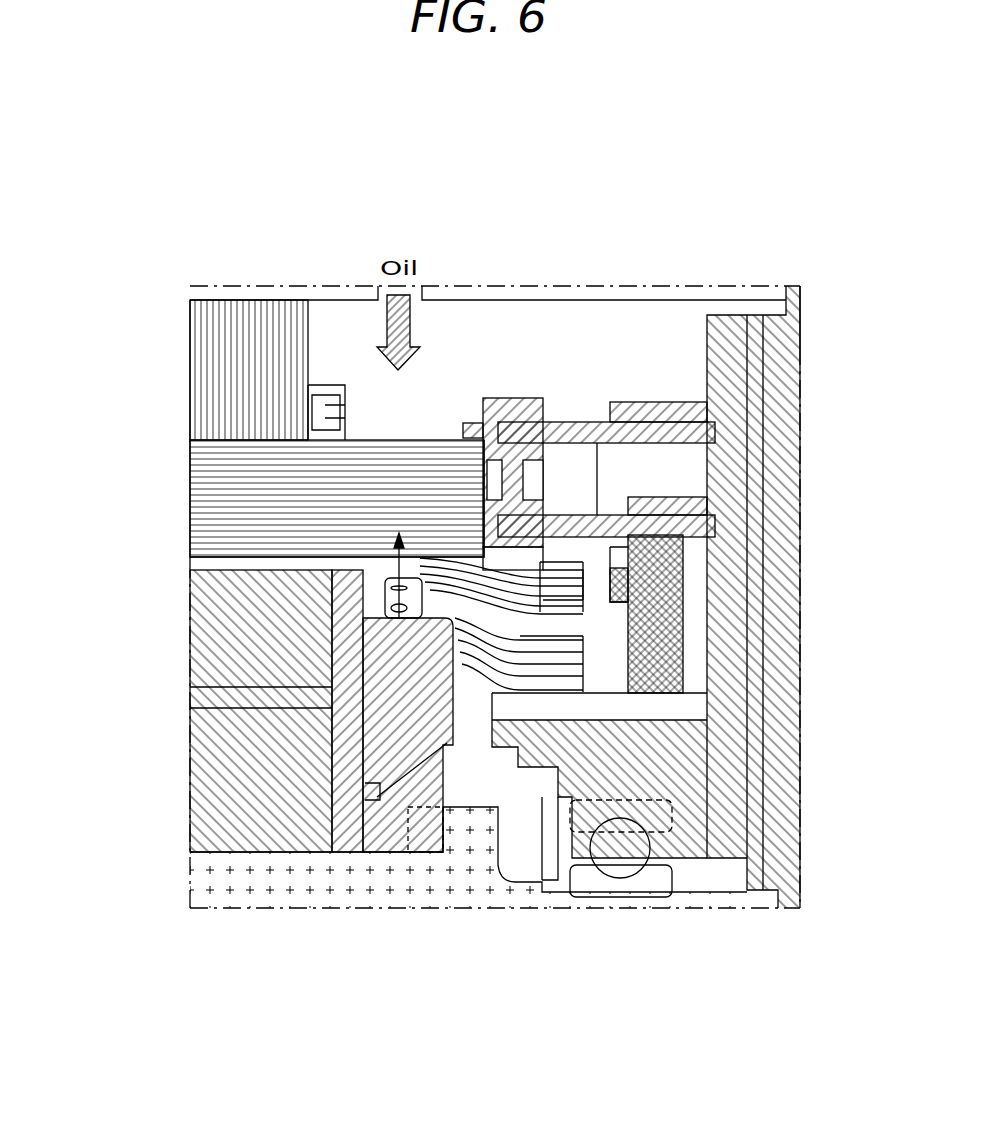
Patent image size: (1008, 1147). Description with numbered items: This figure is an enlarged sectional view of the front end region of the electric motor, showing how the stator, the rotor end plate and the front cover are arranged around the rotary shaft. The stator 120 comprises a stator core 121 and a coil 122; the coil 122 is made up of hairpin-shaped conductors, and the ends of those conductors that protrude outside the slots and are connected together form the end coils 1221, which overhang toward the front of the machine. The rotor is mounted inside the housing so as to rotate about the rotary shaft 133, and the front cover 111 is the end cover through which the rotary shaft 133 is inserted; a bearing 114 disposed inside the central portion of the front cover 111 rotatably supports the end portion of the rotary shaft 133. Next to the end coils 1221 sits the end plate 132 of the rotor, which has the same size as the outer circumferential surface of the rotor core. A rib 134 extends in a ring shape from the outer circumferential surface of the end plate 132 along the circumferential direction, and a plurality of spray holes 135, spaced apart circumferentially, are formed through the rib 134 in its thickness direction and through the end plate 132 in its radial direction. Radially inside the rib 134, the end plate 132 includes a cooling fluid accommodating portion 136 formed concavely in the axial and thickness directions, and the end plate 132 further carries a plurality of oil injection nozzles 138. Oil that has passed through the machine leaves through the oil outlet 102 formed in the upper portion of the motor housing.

The oil outlet 102 is at (422, 290).
The front cover 111 is at (782, 524).
The bearing 114 is at (615, 888).
The stator 120 is at (263, 428).
The stator core 121 is at (210, 350).
The coil 122 is at (200, 465).
The end coil 1221 is at (438, 445).
The end plate 132 is at (468, 670).
The rotary shaft 133 is at (263, 885).
The rib 134 is at (420, 600).
The spray hole 135 is at (380, 572).
The cooling fluid accommodating portion 136 is at (463, 562).
The oil injection nozzle 138 is at (398, 860).